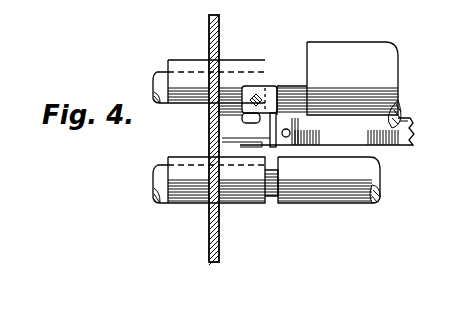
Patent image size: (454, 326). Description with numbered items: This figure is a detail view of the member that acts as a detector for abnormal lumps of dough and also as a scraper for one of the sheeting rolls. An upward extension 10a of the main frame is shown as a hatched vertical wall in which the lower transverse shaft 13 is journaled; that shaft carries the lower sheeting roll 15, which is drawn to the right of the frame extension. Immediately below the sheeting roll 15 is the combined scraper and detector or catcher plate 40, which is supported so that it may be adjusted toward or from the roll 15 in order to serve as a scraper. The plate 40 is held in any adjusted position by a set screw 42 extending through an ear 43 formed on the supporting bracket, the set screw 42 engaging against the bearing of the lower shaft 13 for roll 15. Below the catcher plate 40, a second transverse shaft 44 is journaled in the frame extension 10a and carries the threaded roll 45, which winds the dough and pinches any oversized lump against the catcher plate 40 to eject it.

The upward extension of the main frame 10a is at (227, 203).
The transverse shaft 13 is at (165, 70).
The sheeting roll 15 is at (389, 70).
The catcher plate 40 is at (407, 140).
The set screw 42 is at (262, 86).
The ear 43 is at (290, 95).
The transverse shaft 44 is at (160, 202).
The threaded roll 45 is at (311, 203).